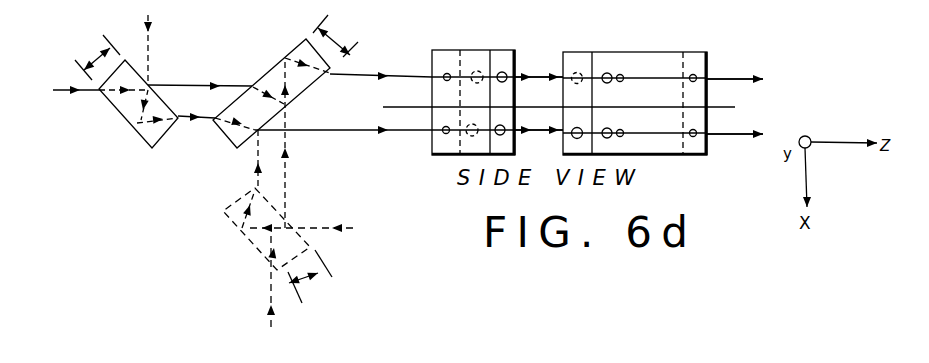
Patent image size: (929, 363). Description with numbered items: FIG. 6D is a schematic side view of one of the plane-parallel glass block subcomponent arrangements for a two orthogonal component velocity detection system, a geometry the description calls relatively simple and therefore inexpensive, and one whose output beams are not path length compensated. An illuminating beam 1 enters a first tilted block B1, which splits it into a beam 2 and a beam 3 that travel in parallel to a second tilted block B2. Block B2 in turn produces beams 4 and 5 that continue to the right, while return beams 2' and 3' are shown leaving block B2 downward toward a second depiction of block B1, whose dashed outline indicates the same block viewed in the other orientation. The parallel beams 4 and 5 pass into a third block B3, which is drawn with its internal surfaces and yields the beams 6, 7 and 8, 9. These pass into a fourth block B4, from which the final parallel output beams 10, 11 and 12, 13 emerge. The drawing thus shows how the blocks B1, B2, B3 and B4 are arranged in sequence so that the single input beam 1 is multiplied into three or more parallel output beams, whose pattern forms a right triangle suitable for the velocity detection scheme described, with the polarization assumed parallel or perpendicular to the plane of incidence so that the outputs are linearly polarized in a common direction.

The input light beam 1 is at (73, 103).
The first split beam 2 is at (200, 78).
The second split beam 3 is at (196, 107).
The beam exiting second beam splitter 4 is at (381, 66).
The beam exiting second beam splitter 5 is at (343, 139).
The return beam 2' is at (292, 143).
The return beam 3' is at (265, 159).
The output beam of third block 6 is at (539, 65).
The output beam of third block 7 is at (539, 63).
The output beam of third block 8 is at (539, 122).
The output beam of third block 9 is at (539, 120).
The output beam of fourth block 10 is at (735, 69).
The output beam of fourth block 11 is at (742, 67).
The output beam of fourth block 12 is at (735, 126).
The output beam of fourth block 13 is at (740, 124).
The first beam splitter block B1 is at (128, 145).
The second beam splitter block B2 is at (234, 149).
The third optical block B3 is at (470, 50).
The fourth optical block B4 is at (627, 52).